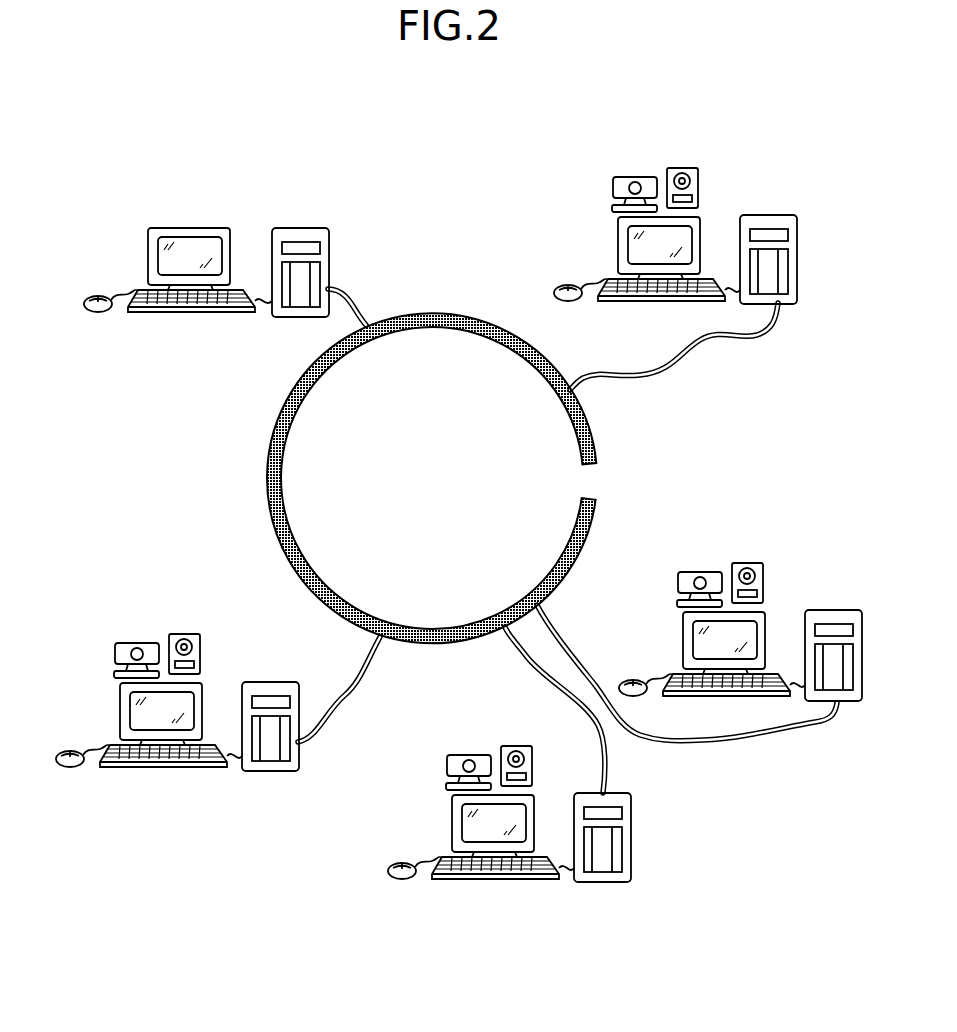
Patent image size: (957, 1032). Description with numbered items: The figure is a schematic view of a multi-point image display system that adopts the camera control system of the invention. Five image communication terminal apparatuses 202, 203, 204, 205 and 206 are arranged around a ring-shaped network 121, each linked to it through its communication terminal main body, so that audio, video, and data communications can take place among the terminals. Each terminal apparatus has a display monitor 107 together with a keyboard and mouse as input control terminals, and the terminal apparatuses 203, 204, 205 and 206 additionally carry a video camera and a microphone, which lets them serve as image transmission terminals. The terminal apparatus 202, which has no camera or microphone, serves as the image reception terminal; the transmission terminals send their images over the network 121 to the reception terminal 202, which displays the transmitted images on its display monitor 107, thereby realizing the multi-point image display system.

The display monitor 107 is at (191, 238).
The network 121 is at (433, 313).
The image communication terminal apparatus 202 is at (207, 240).
The image communication terminal apparatus 203 is at (678, 220).
The image communication terminal apparatus 204 is at (184, 659).
The image communication terminal apparatus 205 is at (747, 590).
The image communication terminal apparatus 206 is at (529, 776).